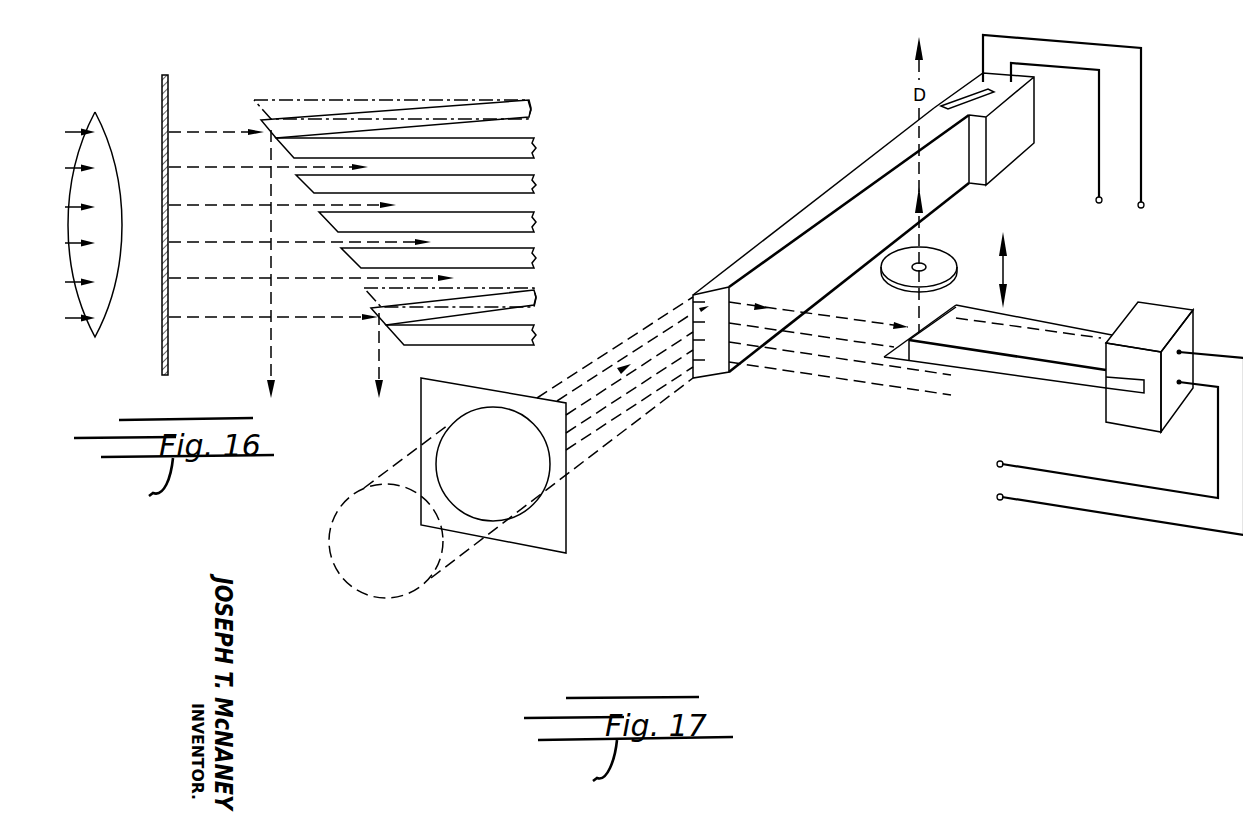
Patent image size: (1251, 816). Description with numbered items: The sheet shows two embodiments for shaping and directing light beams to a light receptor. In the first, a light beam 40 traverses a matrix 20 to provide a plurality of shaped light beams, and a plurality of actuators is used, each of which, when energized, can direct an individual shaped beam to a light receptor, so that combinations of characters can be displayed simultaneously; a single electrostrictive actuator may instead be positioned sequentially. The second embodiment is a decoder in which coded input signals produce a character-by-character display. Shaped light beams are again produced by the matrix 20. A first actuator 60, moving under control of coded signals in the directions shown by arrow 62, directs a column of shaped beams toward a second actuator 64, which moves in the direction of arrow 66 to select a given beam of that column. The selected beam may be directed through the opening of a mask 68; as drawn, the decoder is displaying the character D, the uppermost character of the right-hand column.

In FIG. 16, the matrix 20 is at (168, 97).
In FIG. 17, the matrix 20 is at (558, 505).
In FIG. 16, the light beam 40 is at (90, 118).
In FIG. 17, the first actuator 60 is at (823, 200).
In FIG. 17, the arrow 62 is at (741, 231).
In FIG. 17, the second actuator 64 is at (1060, 316).
In FIG. 17, the arrow 66 is at (1008, 275).
In FIG. 17, the mask 68 is at (943, 250).